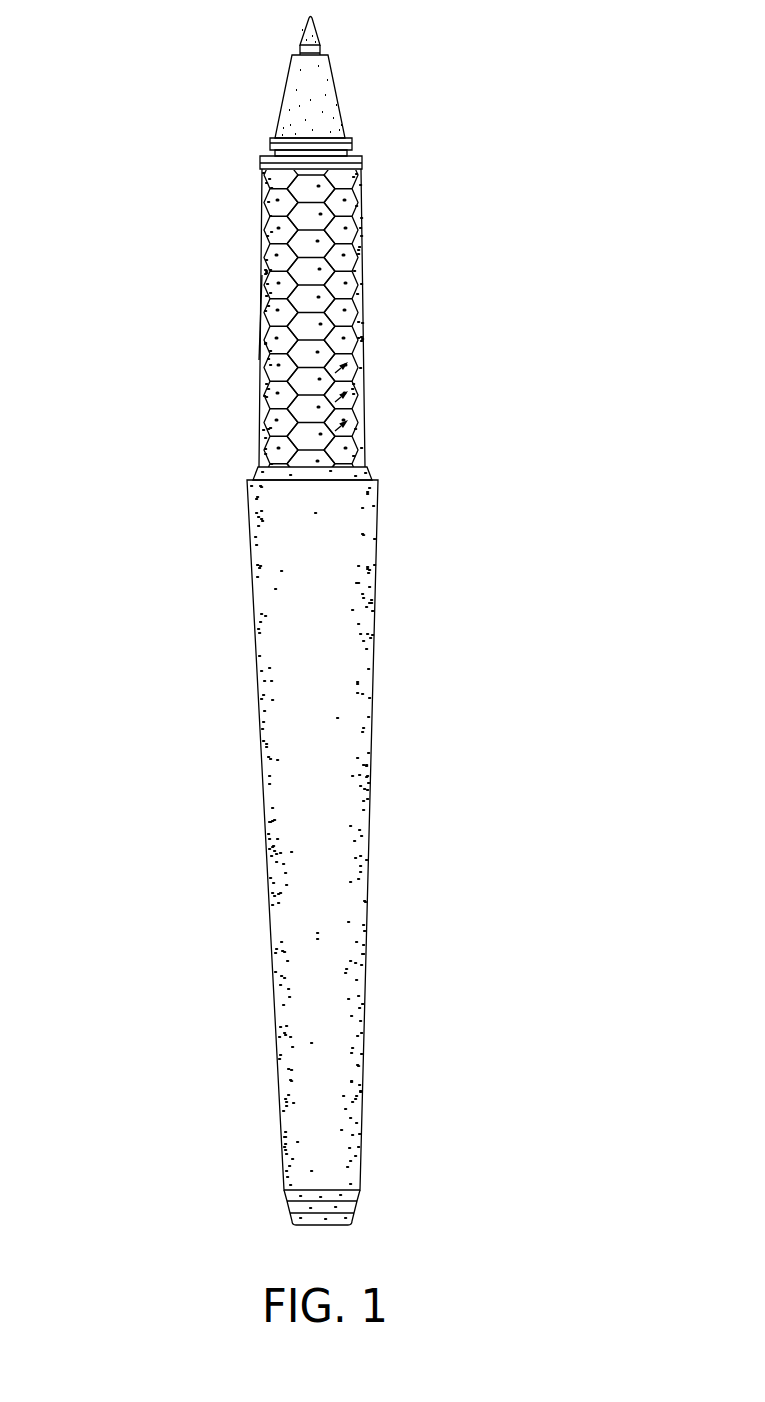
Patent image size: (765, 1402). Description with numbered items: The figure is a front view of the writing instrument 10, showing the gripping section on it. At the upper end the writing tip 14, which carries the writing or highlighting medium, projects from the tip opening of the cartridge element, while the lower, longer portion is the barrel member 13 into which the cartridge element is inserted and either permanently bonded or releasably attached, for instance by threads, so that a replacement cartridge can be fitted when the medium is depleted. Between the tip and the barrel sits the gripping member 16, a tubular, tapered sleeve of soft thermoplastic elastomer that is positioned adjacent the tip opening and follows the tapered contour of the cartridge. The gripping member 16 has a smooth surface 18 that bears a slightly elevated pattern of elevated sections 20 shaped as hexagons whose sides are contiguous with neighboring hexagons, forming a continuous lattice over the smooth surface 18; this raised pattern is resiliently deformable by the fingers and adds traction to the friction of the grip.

The writing instrument 10 is at (157, 362).
The barrel member 13 is at (372, 803).
The writing tip 14 is at (320, 30).
The gripping member 16 is at (363, 297).
The smooth surface 18 is at (365, 407).
The elevated sections 20 is at (262, 355).